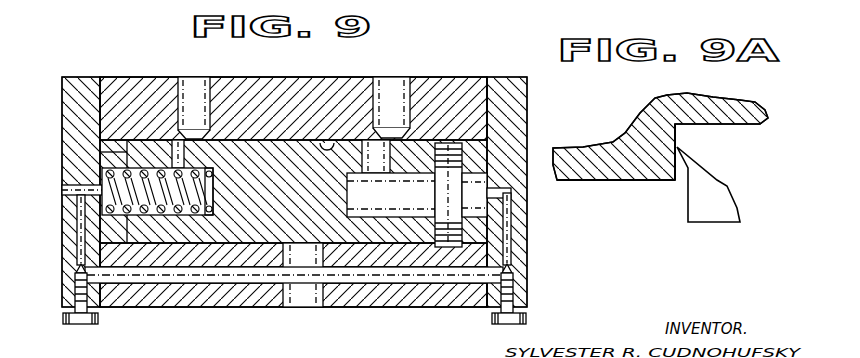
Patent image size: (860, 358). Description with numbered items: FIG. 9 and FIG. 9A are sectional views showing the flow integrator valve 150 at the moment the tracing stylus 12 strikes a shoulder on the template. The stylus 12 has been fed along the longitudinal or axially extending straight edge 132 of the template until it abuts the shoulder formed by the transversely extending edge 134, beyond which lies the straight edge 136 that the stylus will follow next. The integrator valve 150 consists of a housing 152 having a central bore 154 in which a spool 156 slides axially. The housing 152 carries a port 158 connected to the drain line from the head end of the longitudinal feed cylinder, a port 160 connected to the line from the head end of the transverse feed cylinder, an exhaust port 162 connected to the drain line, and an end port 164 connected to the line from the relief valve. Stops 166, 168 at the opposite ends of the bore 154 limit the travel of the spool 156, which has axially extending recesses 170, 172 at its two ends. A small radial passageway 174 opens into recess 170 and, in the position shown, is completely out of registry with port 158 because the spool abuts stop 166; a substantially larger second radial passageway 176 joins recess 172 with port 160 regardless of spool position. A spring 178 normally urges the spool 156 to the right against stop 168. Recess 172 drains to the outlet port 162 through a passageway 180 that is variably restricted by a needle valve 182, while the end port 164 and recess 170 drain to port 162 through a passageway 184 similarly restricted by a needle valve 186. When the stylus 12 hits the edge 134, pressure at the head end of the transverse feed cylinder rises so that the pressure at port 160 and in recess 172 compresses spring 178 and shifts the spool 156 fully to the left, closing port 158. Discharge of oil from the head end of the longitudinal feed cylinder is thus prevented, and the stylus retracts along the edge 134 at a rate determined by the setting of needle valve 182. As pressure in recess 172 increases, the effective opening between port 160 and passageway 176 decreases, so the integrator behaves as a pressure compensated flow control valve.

In FIG. 9A, the stylus 12 is at (723, 206).
In FIG. 9A, the longitudinal straight edge 132 is at (748, 124).
In FIG. 9A, the transversely extending edge 134 is at (678, 140).
In FIG. 9A, the straight edge 136 is at (611, 182).
In FIG. 9, the flow integrator valve 150 is at (531, 116).
In FIG. 9, the housing 152 is at (470, 92).
In FIG. 9, the central bore 154 is at (331, 142).
In FIG. 9, the spool 156 is at (333, 196).
In FIG. 9, the port 158 is at (196, 92).
In FIG. 9, the port 160 is at (393, 90).
In FIG. 9, the exhaust port 162 is at (306, 297).
In FIG. 9, the end port 164 is at (75, 193).
In FIG. 9, the stop 166 is at (118, 153).
In FIG. 9, the stop 168 is at (470, 160).
In FIG. 9, the recess 170 is at (204, 212).
In FIG. 9, the recess 172 is at (527, 198).
In FIG. 9, the radial passageway 174 is at (182, 160).
In FIG. 9, the second radial passageway 176 is at (383, 174).
In FIG. 9, the spring 178 is at (160, 204).
In FIG. 9, the passageway 180 is at (435, 278).
In FIG. 9, the needle valve 182 is at (504, 326).
In FIG. 9, the passageway 184 is at (187, 278).
In FIG. 9, the needle valve 186 is at (78, 323).